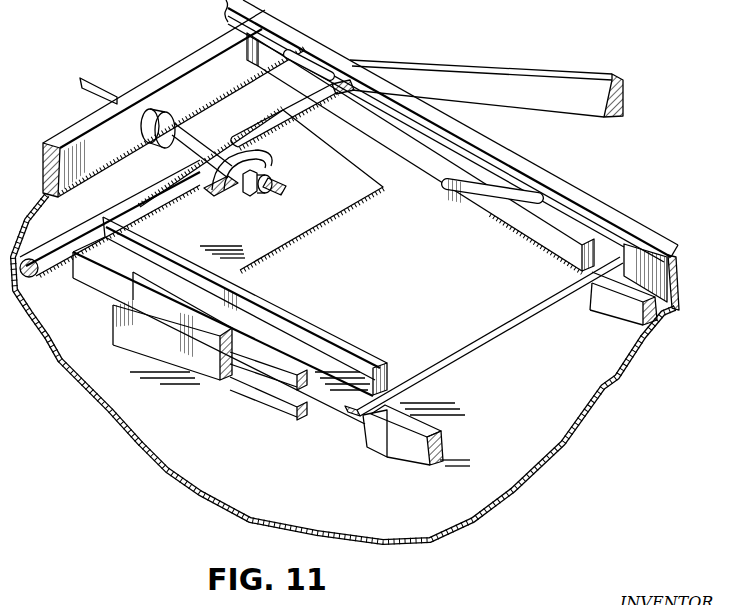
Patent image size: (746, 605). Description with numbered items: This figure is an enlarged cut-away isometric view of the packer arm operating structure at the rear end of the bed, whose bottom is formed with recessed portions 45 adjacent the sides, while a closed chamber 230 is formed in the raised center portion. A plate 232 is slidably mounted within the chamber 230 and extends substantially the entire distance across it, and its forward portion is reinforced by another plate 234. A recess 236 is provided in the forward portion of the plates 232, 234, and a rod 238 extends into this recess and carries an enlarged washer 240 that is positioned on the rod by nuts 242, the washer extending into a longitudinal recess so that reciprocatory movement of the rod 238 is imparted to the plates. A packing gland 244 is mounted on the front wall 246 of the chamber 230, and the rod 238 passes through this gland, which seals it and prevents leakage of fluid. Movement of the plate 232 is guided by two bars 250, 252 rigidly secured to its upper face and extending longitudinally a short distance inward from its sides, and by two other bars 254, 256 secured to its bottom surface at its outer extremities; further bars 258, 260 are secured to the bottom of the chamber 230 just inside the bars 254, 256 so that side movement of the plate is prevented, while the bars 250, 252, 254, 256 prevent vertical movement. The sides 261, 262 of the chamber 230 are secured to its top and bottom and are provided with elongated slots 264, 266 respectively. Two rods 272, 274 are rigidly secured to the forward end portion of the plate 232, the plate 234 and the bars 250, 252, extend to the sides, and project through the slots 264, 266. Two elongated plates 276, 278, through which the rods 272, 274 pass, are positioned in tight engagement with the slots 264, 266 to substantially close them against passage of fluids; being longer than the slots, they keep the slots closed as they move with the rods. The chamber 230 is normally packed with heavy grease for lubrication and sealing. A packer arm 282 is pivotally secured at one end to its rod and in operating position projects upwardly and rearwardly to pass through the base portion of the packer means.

The recessed portions 45 is at (337, 512).
The closed chamber 230 is at (475, 198).
The plate 232 is at (472, 345).
The reinforcing plate 234 is at (333, 203).
The recess 236 is at (272, 178).
The rod 238 is at (190, 132).
The enlarged washer 240 is at (233, 192).
The nuts 242 is at (250, 197).
The packing gland 244 is at (160, 110).
The front wall 246 is at (181, 72).
The bar 250 is at (302, 326).
The bar 252 is at (523, 229).
The bar 254 is at (365, 452).
The bar 256 is at (623, 266).
The bar 258 is at (430, 426).
The bar 260 is at (623, 302).
The side of chamber 261 is at (250, 388).
The side of chamber 262 is at (652, 263).
The elongated slot 264 is at (293, 398).
The elongated slot 266 is at (510, 180).
The rod 272 is at (80, 228).
The rod 274 is at (293, 103).
The elongated plate 276 is at (163, 328).
The elongated plate 278 is at (571, 188).
The packer arm 282 is at (530, 82).